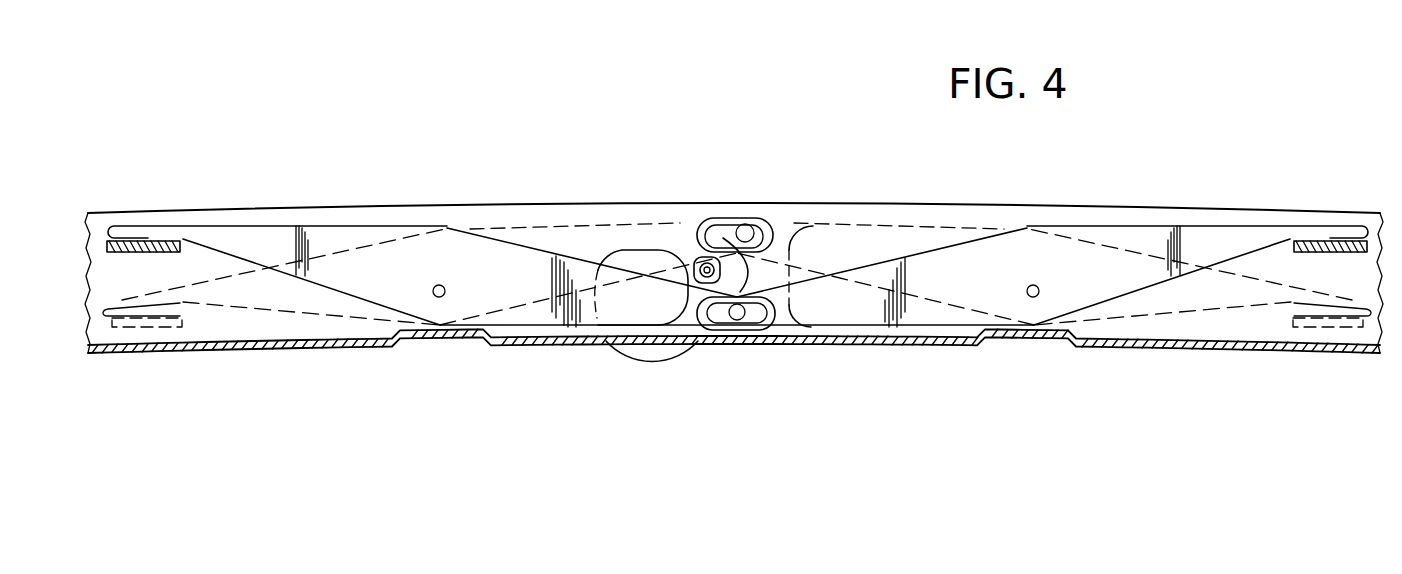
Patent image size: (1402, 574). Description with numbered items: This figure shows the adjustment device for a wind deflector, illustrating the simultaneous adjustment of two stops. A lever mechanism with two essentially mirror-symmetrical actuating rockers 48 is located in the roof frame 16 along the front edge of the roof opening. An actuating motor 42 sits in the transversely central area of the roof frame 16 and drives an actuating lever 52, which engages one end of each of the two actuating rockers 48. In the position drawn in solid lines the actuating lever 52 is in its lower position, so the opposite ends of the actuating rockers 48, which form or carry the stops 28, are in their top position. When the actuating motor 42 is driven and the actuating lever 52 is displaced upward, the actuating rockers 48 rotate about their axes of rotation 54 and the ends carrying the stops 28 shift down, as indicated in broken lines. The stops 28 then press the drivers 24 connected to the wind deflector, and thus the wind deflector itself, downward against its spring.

The frame 16 is at (835, 345).
The driver 24 is at (124, 256).
The stop 28 is at (142, 233).
The actuating motor 42 is at (653, 352).
The actuating rocker 48 is at (375, 263).
The actuating lever 52 is at (725, 252).
The axis of rotation 54 is at (440, 297).